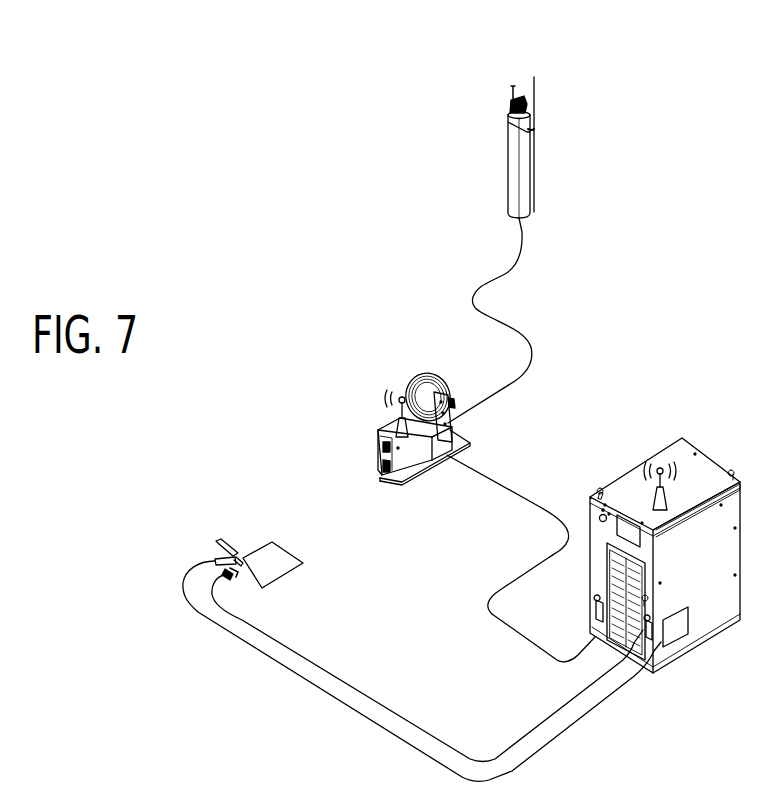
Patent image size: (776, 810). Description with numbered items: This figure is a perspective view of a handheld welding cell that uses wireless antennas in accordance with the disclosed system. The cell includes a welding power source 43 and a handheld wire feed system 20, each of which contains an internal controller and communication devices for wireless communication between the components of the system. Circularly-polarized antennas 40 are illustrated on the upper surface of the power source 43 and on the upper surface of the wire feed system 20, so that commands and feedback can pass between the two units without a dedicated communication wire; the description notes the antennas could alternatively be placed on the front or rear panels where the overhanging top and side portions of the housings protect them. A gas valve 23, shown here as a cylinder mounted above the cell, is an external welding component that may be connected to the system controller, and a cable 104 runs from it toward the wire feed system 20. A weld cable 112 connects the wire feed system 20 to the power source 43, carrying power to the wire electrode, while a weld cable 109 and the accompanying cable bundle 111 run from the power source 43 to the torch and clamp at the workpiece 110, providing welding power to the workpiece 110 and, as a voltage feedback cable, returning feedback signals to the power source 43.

The wire feed system 20 is at (395, 422).
The gas valve 23 is at (508, 164).
The circularly-polarized antennas 40 is at (653, 500).
The welding power source 43 is at (620, 478).
The cable 104 is at (500, 270).
The weld cable 109 is at (273, 667).
The workpiece 110 is at (258, 550).
The cable bundle 111 is at (313, 673).
The weld cable 112 is at (578, 648).